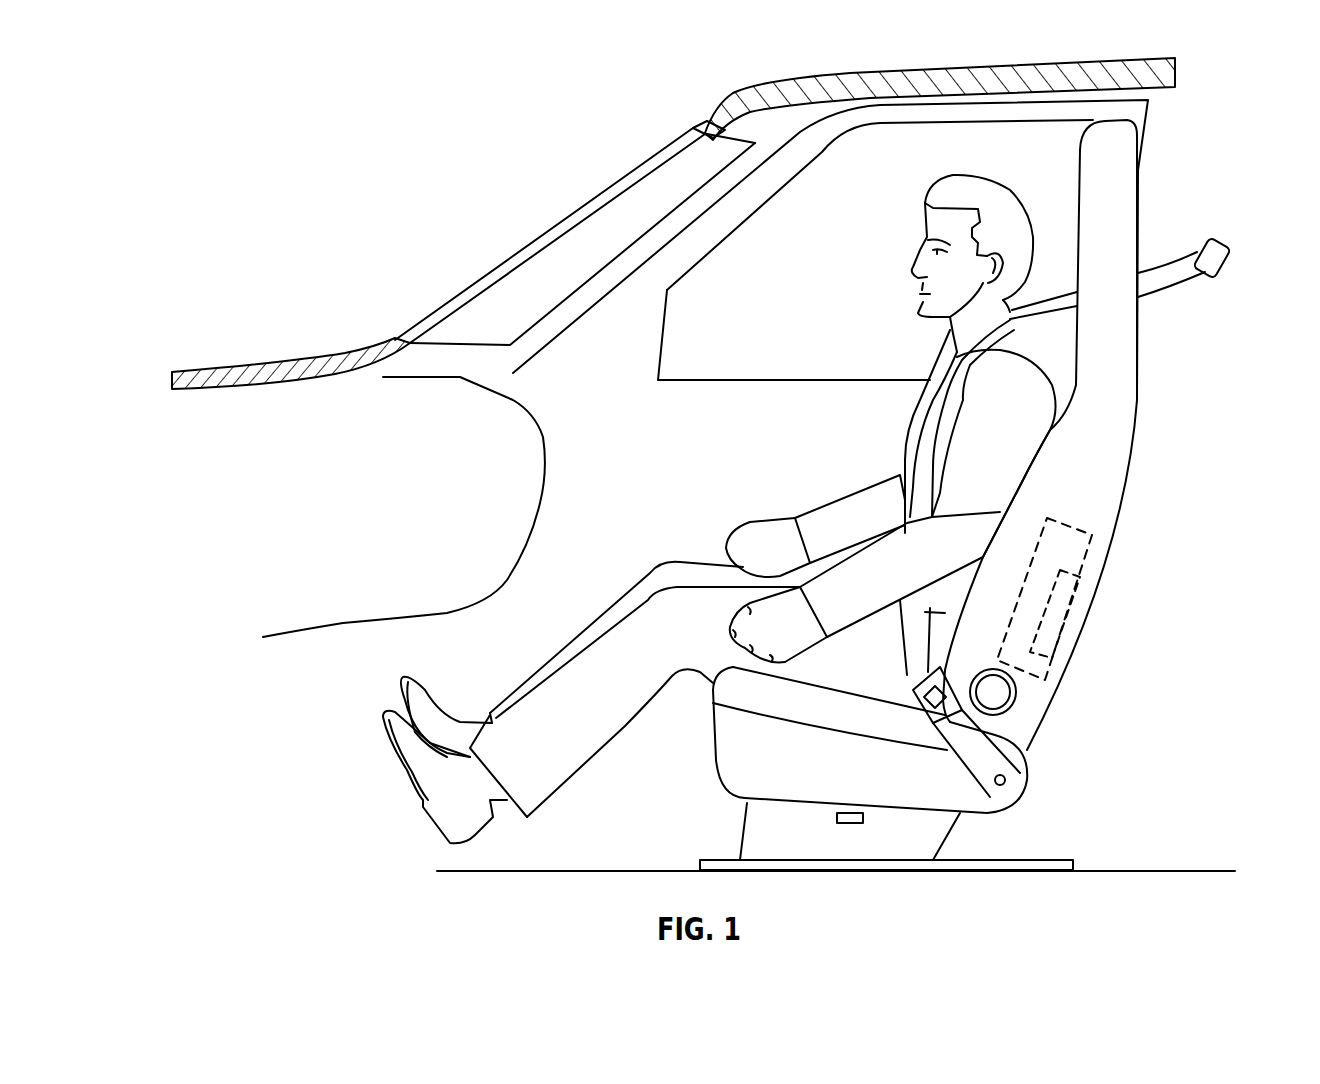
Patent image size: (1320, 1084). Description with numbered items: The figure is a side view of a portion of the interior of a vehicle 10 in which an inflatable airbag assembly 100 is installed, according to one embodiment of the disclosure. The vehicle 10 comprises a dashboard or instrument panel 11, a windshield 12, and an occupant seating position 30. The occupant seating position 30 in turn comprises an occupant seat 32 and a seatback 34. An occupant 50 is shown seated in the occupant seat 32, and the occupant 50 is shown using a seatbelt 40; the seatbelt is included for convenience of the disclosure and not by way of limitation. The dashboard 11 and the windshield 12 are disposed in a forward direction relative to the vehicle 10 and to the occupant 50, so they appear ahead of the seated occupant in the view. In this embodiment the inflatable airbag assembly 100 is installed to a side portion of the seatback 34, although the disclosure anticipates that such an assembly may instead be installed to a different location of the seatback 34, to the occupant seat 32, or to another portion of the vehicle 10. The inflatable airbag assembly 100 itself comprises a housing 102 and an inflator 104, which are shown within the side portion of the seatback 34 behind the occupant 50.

The vehicle 10 is at (321, 163).
The dashboard 11 is at (481, 485).
The windshield 12 is at (585, 204).
The occupant seating position 30 is at (1154, 404).
The occupant seat 32 is at (841, 775).
The seatback 34 is at (1094, 503).
The seatbelt 40 is at (1008, 731).
The occupant 50 is at (1024, 421).
The inflatable airbag assembly 100 is at (1108, 606).
The housing 102 is at (1098, 552).
The inflator 104 is at (1066, 640).